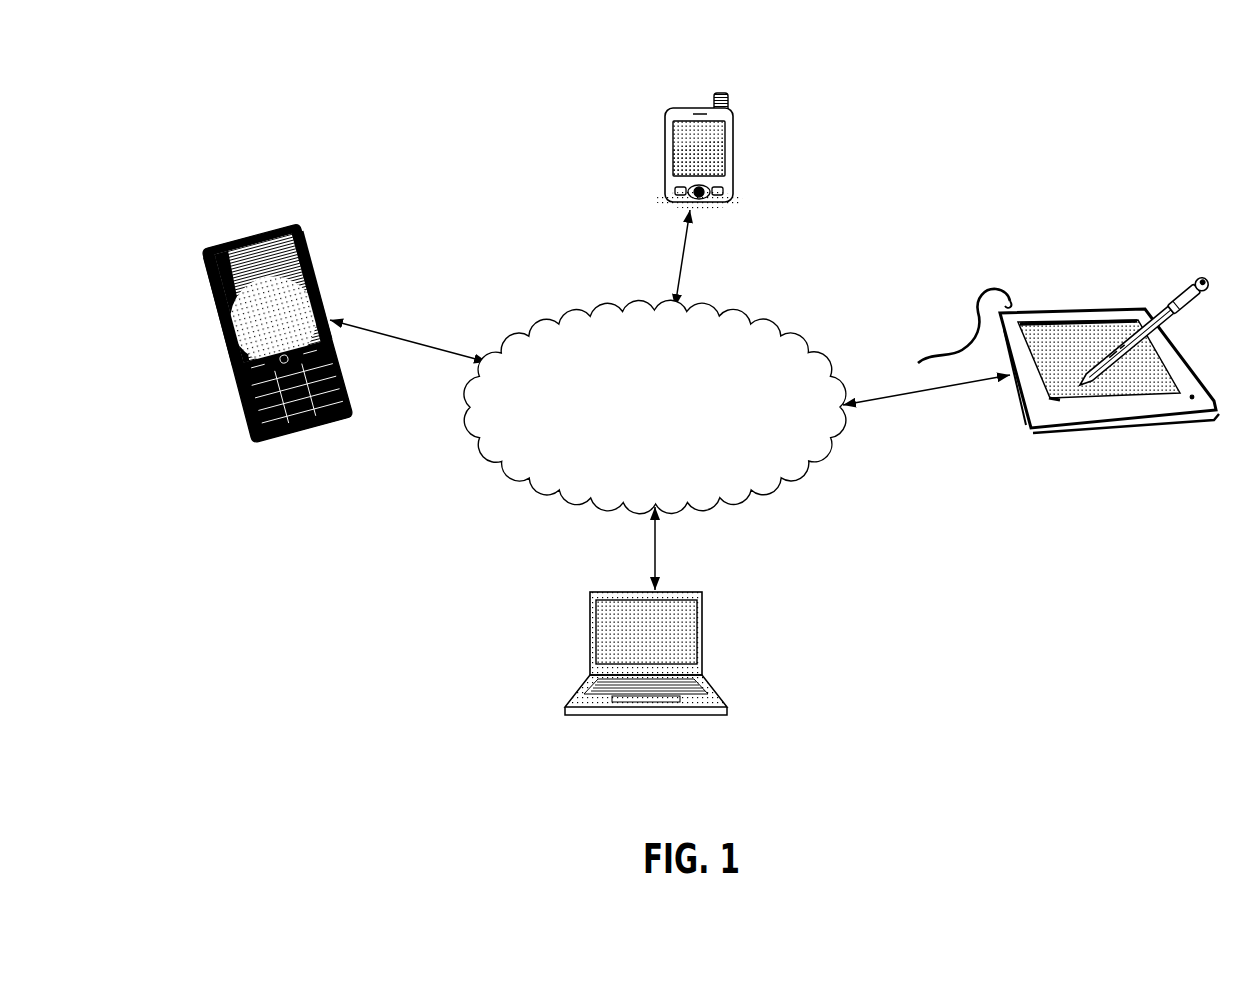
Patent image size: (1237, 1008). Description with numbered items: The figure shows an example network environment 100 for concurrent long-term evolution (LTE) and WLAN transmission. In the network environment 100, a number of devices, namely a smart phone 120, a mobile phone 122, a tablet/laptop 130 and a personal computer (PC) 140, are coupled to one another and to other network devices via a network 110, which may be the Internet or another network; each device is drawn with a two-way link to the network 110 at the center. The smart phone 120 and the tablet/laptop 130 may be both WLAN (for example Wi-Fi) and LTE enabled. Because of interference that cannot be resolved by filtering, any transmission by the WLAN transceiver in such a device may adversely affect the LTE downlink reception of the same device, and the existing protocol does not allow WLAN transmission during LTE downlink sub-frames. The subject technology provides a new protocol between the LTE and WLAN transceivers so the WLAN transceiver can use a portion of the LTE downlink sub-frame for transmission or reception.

The network environment 100 is at (315, 110).
The network 110 is at (678, 432).
The smart phone 120 is at (262, 443).
The mobile phone 122 is at (658, 192).
The tablet/laptop 130 is at (1042, 440).
The personal computer (PC) 140 is at (709, 718).